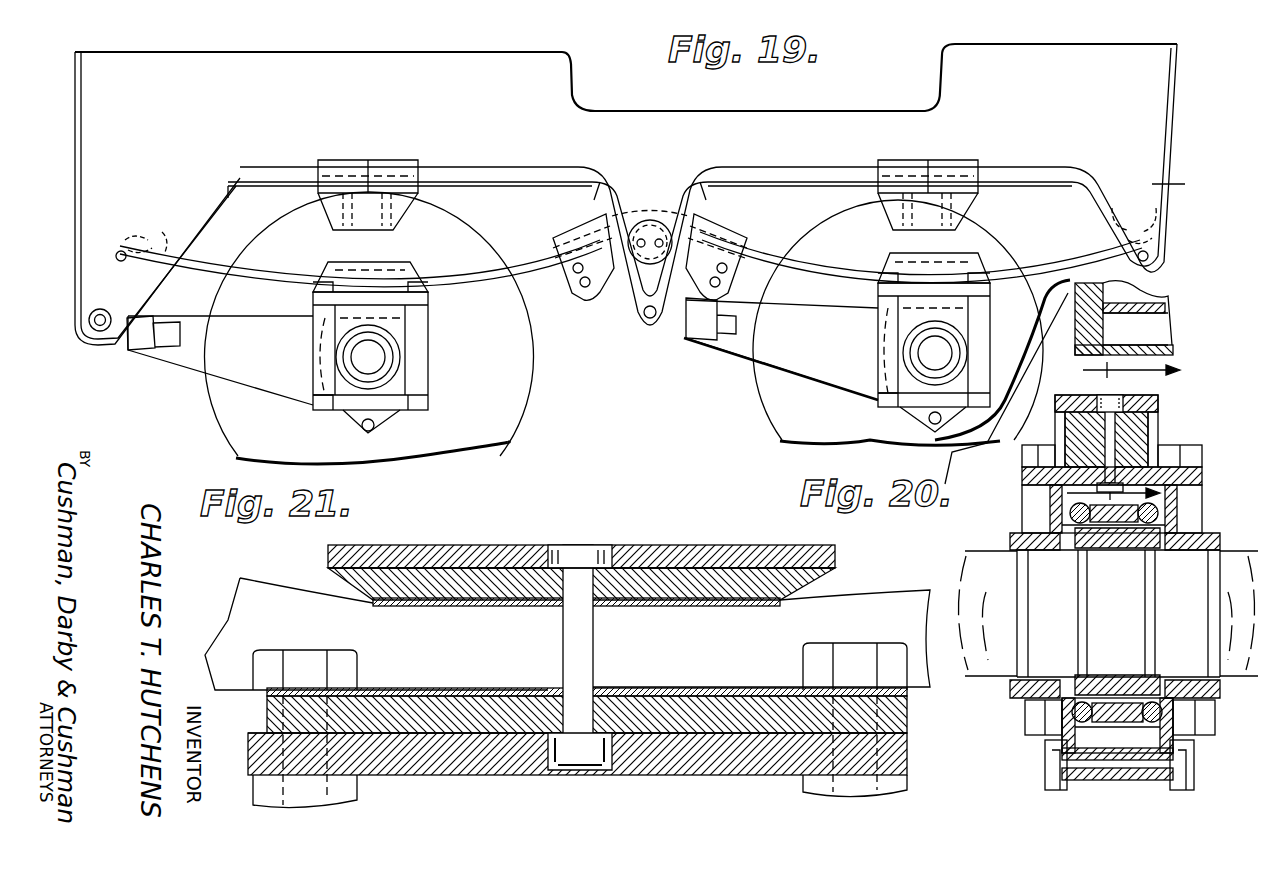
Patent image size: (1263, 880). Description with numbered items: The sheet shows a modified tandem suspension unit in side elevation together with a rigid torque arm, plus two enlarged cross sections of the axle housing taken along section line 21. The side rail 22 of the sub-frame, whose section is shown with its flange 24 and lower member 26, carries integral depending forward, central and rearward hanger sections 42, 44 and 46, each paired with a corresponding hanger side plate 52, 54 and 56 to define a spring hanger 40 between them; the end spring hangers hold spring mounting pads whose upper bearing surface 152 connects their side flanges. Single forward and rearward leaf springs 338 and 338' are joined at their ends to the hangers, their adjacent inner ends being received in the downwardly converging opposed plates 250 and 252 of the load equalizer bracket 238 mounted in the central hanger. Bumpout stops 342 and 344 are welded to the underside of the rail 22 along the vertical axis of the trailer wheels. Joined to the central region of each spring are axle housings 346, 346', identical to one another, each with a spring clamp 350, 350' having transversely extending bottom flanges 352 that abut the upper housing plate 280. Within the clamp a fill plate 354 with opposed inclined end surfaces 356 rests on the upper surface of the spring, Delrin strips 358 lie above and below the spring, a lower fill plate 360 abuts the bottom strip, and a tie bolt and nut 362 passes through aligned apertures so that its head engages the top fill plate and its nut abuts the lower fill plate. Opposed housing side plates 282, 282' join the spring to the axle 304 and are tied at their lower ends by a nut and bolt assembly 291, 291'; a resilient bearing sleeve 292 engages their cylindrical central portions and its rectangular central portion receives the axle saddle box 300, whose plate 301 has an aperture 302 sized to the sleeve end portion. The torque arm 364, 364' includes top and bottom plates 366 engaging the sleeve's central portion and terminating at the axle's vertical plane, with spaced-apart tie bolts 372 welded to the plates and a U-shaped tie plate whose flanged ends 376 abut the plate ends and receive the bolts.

In FIG. 20, the section line 21 is at (1062, 398).
In FIG. 19, the side rail 22 is at (195, 128).
In FIG. 20, the side rail 22 is at (1172, 326).
In FIG. 21, the side rail 22 is at (567, 634).
In FIG. 19, the frame flange 24 is at (528, 50).
In FIG. 20, the frame flange 24 is at (1175, 352).
In FIG. 19, the cross bar 26 is at (290, 166).
In FIG. 19, the spring hanger 40 is at (94, 348).
In FIG. 19, the forward hanger section 42 is at (115, 240).
In FIG. 19, the central hanger section 44 is at (652, 206).
In FIG. 19, the rearward hanger section 46 is at (1182, 172).
In FIG. 19, the hanger side plate 52 is at (229, 200).
In FIG. 19, the hanger side plate 54 is at (597, 190).
In FIG. 19, the hanger side plate 56 is at (1082, 178).
In FIG. 19, the bearing surface 152 is at (1164, 221).
In FIG. 19, the load equalizer bracket 238 is at (740, 254).
In FIG. 19, the opposed plate 250 is at (608, 285).
In FIG. 19, the opposed plate 252 is at (728, 278).
In FIG. 21, the upper housing plate 280 is at (640, 766).
In FIG. 19, the housing side plate 282 is at (415, 360).
In FIG. 20, the housing side plate 282 is at (1094, 506).
In FIG. 19, the housing side plate 282' is at (889, 353).
In FIG. 19, the nut and bolt assembly 291 is at (398, 434).
In FIG. 20, the nut and bolt assembly 291 is at (1119, 771).
In FIG. 19, the nut and bolt assembly 291' is at (901, 441).
In FIG. 20, the resilient bearing sleeve 292 is at (1172, 613).
In FIG. 20, the axle saddle box 300 is at (1148, 640).
In FIG. 20, the plate 301 is at (1132, 606).
In FIG. 20, the aperture 302 is at (1118, 668).
In FIG. 20, the axle 304 is at (1010, 590).
In FIG. 19, the forward leaf spring 338 is at (359, 252).
In FIG. 20, the forward leaf spring 338 is at (1038, 413).
In FIG. 19, the rearward leaf spring 338' is at (924, 247).
In FIG. 19, the bumpout stop 342 is at (418, 168).
In FIG. 20, the bumpout stop 342 is at (1110, 298).
In FIG. 19, the bumpout stop 344 is at (978, 168).
In FIG. 20, the axle housing 346 is at (1018, 735).
In FIG. 19, the axle housing 346' is at (847, 415).
In FIG. 19, the spring clamp 350 is at (388, 334).
In FIG. 20, the spring clamp 350 is at (1132, 431).
In FIG. 21, the spring clamp 350 is at (577, 661).
In FIG. 19, the spring clamp 350' is at (942, 330).
In FIG. 20, the bottom flange 352 is at (1202, 466).
In FIG. 20, the fill plate 354 is at (1158, 408).
In FIG. 21, the fill plate 354 is at (510, 566).
In FIG. 21, the inclined end surface 356 is at (340, 580).
In FIG. 21, the strip 358 is at (440, 605).
In FIG. 20, the lower fill plate 360 is at (1065, 440).
In FIG. 21, the lower fill plate 360 is at (735, 698).
In FIG. 20, the tie bolt and nut 362 is at (1115, 396).
In FIG. 21, the tie bolt and nut 362 is at (576, 556).
In FIG. 19, the torque arm 364 is at (330, 328).
In FIG. 19, the torque arm 364' is at (877, 322).
In FIG. 20, the top and bottom plates 366 is at (1059, 613).
In FIG. 20, the tie bolt 372 is at (1177, 527).
In FIG. 20, the flanged end 376 is at (1110, 724).